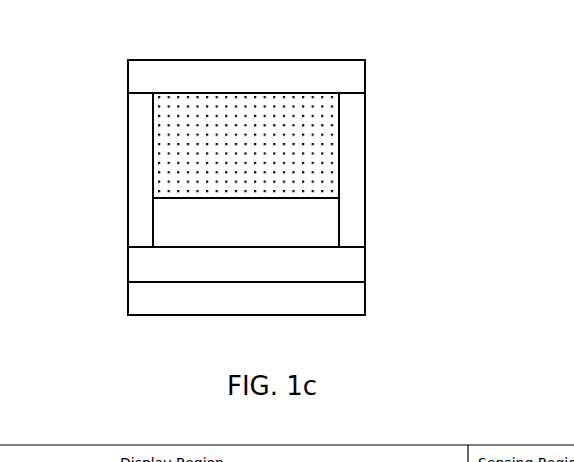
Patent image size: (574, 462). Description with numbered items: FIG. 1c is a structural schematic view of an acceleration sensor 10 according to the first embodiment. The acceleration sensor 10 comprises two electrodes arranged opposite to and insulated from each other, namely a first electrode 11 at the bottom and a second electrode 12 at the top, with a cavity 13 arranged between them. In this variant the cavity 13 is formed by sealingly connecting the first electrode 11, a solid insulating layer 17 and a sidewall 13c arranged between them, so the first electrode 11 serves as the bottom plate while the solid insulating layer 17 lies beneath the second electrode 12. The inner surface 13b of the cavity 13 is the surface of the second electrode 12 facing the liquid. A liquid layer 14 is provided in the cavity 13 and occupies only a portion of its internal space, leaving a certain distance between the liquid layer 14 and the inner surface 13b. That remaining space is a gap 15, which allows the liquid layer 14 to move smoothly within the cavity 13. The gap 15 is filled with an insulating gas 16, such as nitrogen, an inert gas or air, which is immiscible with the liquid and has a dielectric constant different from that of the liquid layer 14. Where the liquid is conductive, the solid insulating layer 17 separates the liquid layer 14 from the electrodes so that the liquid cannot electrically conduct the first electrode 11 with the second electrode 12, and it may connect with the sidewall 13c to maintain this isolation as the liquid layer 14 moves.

The acceleration sensor 10 is at (252, 30).
The first electrode 11 is at (300, 305).
The second electrode 12 is at (300, 83).
The cavity 13 is at (373, 95).
The inner surface 13b is at (317, 98).
The sidewall 13c is at (347, 213).
The liquid layer 14 is at (157, 238).
The gap 15 is at (153, 170).
The insulating gas 16 is at (175, 124).
The solid insulating layer 17 is at (157, 263).